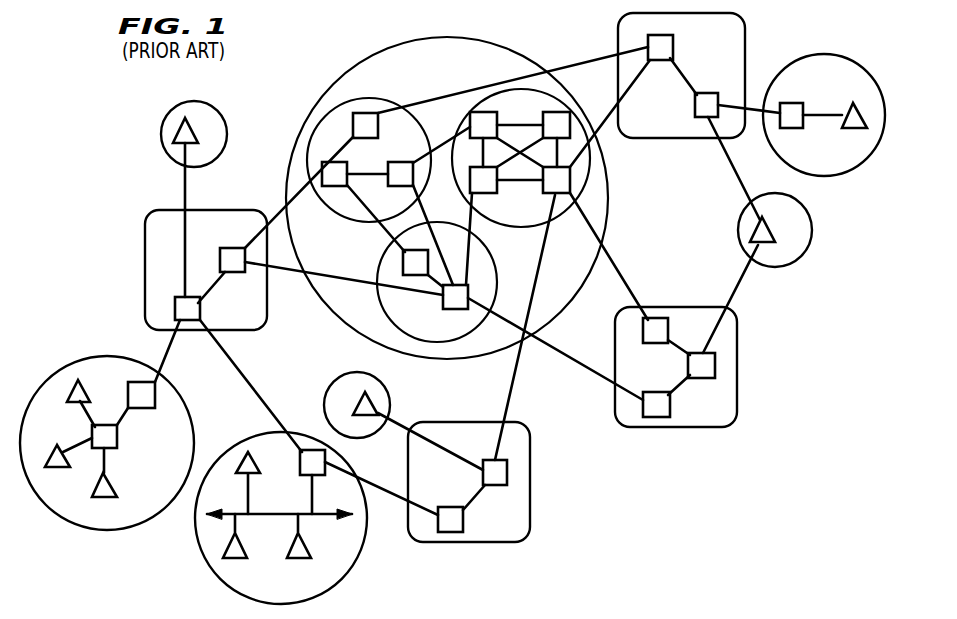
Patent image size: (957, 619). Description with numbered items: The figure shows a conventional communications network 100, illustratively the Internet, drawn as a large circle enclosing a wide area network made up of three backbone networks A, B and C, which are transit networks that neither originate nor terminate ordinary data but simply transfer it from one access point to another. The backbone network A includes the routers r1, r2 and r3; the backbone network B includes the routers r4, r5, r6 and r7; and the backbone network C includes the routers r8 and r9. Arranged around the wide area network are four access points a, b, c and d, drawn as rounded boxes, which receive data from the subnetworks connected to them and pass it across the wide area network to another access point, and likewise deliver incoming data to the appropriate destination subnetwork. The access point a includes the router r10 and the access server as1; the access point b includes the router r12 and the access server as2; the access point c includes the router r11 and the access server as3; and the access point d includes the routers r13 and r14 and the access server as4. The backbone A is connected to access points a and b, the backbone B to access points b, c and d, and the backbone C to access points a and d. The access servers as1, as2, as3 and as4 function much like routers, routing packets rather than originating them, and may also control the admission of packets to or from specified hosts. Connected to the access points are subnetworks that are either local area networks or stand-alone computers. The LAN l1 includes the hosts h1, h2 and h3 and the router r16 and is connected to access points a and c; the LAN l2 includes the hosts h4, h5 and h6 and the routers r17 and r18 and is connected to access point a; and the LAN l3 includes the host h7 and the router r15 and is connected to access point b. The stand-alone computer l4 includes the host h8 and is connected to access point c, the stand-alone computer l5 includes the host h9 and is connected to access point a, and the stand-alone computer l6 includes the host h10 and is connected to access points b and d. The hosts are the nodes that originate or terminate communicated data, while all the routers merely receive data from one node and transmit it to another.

The communications network 100 is at (513, 47).
The backbone network A is at (369, 151).
The backbone network B is at (524, 158).
The backbone network C is at (443, 282).
The access point a is at (206, 258).
The access point b is at (681, 69).
The access point c is at (480, 482).
The access point d is at (690, 367).
The LAN l1 is at (289, 518).
The LAN l2 is at (107, 438).
The LAN l3 is at (824, 108).
The stand alone computer l4 is at (367, 405).
The stand alone computer l5 is at (200, 126).
The stand alone computer l6 is at (789, 230).
The router r1 is at (500, 93).
The router r2 is at (363, 207).
The router r3 is at (408, 206).
The router r4 is at (506, 129).
The router r5 is at (533, 129).
The router r6 is at (504, 226).
The router r7 is at (572, 260).
The router r8 is at (444, 331).
The router r9 is at (423, 258).
The router r10 is at (275, 220).
The router r11 is at (485, 473).
The router r12 is at (680, 65).
The router r13 is at (674, 336).
The router r14 is at (664, 394).
The router r15 is at (810, 103).
The router r16 is at (369, 482).
The router r17 is at (150, 372).
The router r18 is at (106, 437).
The access server as1 is at (228, 297).
The access server as2 is at (720, 156).
The access server as3 is at (441, 508).
The access server as4 is at (723, 326).
The host h1 is at (307, 536).
The host h2 is at (257, 482).
The host h3 is at (244, 536).
The host h4 is at (87, 388).
The host h5 is at (49, 450).
The host h6 is at (112, 483).
The host h7 is at (854, 129).
The host h8 is at (406, 431).
The host h9 is at (196, 131).
The host h10 is at (777, 231).